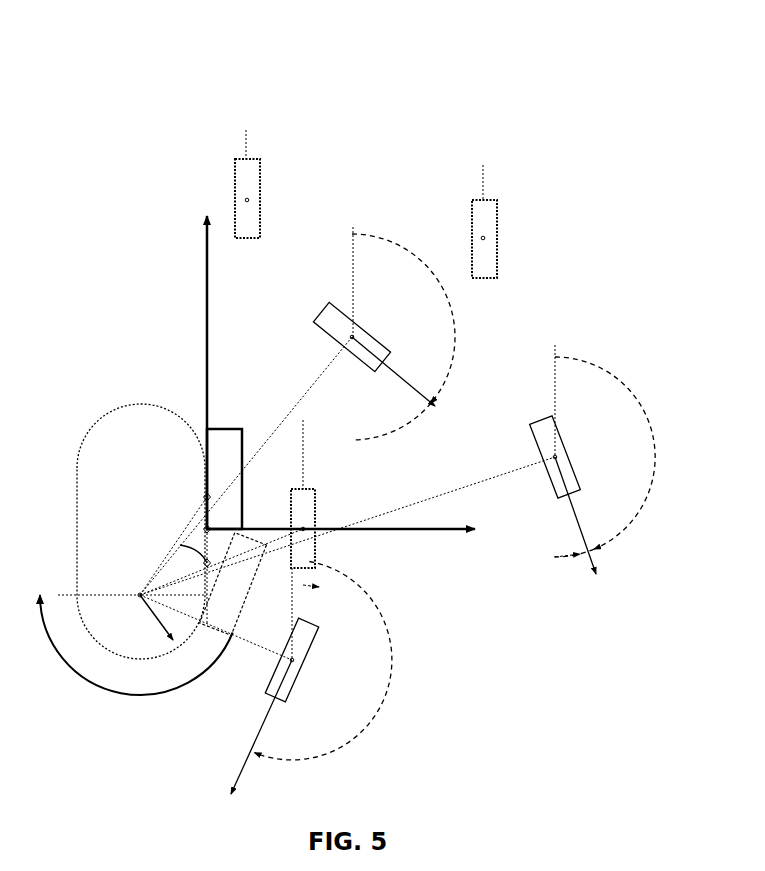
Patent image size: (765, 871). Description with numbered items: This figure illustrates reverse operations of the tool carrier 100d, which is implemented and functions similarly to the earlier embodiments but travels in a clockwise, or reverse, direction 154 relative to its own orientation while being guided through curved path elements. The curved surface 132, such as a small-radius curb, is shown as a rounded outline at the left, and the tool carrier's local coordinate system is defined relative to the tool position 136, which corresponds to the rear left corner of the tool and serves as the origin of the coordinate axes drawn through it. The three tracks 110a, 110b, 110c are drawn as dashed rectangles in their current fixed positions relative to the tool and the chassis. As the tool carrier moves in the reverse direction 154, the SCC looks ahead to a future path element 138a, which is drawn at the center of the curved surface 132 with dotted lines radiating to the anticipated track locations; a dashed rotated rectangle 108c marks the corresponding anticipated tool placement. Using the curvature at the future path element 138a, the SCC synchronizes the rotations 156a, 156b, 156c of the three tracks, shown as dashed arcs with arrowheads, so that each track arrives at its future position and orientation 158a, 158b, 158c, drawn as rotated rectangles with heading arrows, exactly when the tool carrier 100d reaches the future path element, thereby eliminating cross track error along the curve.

The tool carrier 100d is at (95, 31).
The track 110a is at (235, 185).
The track 110b is at (472, 218).
The track 110c is at (315, 510).
The curved surface 132 is at (97, 425).
The tool position 136 is at (205, 526).
The future path element 138a is at (306, 498).
The clockwise direction 154 is at (167, 695).
The virtual object position 108c is at (252, 592).
The track position/orientation 158a is at (320, 310).
The track position/orientation 158b is at (548, 420).
The track position/orientation 158c is at (300, 665).
The track rotation 156a is at (457, 322).
The track rotation 156b is at (598, 364).
The track rotation 156c is at (392, 642).